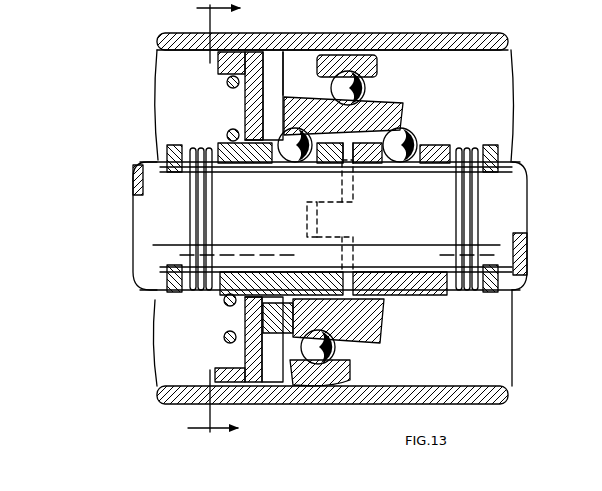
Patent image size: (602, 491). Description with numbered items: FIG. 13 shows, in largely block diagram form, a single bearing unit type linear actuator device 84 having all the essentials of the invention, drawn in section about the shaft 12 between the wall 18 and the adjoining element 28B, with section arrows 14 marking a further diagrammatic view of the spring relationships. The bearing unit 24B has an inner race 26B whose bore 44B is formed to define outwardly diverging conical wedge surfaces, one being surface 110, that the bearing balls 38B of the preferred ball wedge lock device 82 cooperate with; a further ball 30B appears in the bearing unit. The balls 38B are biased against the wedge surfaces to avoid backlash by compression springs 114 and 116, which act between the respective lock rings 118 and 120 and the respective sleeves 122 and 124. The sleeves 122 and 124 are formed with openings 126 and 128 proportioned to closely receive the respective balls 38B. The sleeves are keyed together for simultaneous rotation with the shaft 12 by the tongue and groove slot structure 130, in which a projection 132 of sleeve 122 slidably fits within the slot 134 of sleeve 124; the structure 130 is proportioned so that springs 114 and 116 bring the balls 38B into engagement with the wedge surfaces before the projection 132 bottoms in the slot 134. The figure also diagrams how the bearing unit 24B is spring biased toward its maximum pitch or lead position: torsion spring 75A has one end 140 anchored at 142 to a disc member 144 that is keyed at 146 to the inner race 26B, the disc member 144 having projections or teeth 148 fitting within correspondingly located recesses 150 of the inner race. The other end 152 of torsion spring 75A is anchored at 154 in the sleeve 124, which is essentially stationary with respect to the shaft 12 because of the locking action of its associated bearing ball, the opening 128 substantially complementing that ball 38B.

The shaft 12 is at (512, 207).
The section line 14 is at (199, 219).
The housing top wall 18 is at (513, 45).
The bearing unit 24B is at (447, 35).
The inner race 26B is at (403, 110).
The bearing retainer 28B is at (410, 57).
The ball 30B is at (367, 90).
The bearing ball 38B is at (287, 160).
The bore 44B is at (396, 323).
The torsion spring 75A is at (157, 68).
The ball wedge lock device 82 is at (421, 134).
The linear actuator device 84 is at (483, 100).
The conical surface 110 is at (293, 302).
The compression spring 114 is at (472, 146).
The compression spring 116 is at (203, 142).
The lock ring 118 is at (512, 155).
The lock ring 120 is at (134, 162).
The sleeve 122 is at (526, 250).
The sleeve 124 is at (232, 158).
The opening 126 is at (415, 163).
The opening 128 is at (330, 160).
The tongue and groove slot structure 130 is at (299, 227).
The projection 132 is at (330, 220).
The slot 134 is at (305, 210).
The end of torsion spring 140 is at (257, 52).
The anchor 142 is at (283, 62).
The disc member 144 is at (276, 97).
The key 146 is at (340, 33).
The projections or teeth 148 is at (310, 48).
The recesses 150 is at (243, 92).
The other end of torsion spring 152 is at (240, 297).
The anchor 154 is at (210, 308).